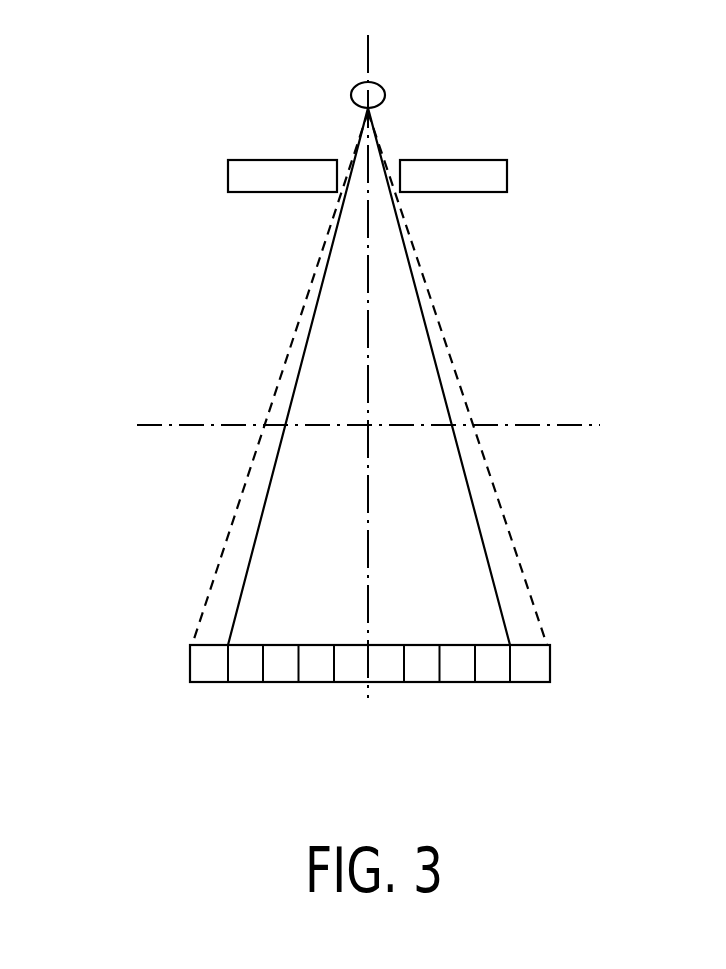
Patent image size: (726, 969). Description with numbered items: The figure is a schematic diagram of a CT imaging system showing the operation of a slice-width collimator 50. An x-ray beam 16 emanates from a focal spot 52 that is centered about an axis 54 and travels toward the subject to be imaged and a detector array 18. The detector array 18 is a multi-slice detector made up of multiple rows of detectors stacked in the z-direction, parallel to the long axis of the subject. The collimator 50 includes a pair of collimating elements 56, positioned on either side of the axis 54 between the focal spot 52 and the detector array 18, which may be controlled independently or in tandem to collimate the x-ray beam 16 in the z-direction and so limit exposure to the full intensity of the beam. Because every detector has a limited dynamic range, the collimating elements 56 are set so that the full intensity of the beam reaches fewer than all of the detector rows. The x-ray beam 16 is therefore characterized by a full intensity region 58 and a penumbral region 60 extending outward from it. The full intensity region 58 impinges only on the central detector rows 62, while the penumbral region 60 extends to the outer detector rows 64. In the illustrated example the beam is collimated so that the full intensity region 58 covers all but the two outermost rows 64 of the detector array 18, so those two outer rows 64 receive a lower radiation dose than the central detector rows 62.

The x-ray beam 16 is at (233, 349).
The detector array 18 is at (207, 716).
The collimator 50 is at (437, 108).
The focal spot 52 is at (380, 86).
The axis 54 is at (368, 363).
The collimating elements 56 is at (283, 160).
The full intensity region 58 is at (442, 540).
The penumbral region 60 is at (522, 602).
The central detector rows 62 is at (510, 692).
The outer detector rows 64 is at (207, 663).